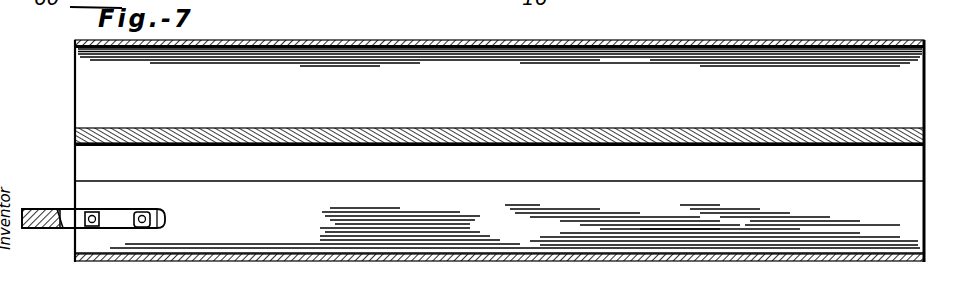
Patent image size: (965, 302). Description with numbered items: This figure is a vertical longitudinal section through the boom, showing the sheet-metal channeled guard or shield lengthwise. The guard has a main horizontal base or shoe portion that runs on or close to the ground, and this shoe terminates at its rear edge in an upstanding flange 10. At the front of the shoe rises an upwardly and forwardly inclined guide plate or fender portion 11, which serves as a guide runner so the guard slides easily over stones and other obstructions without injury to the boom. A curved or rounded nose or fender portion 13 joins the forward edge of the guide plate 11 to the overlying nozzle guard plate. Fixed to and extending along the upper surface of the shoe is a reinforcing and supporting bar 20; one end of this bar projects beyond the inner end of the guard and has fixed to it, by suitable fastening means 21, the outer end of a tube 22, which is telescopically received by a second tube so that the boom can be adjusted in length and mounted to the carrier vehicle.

The upstanding flange 10 is at (522, 262).
The guide plate or fender portion 11 is at (404, 99).
The curved nose or fender portion 13 is at (518, 35).
The reinforcing and supporting bar 20 is at (515, 220).
The fastening means 21 is at (178, 150).
The tube 22 is at (41, 209).